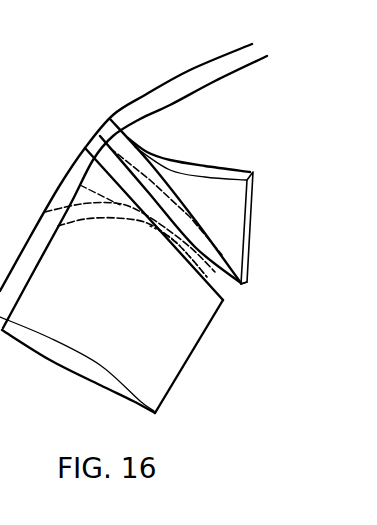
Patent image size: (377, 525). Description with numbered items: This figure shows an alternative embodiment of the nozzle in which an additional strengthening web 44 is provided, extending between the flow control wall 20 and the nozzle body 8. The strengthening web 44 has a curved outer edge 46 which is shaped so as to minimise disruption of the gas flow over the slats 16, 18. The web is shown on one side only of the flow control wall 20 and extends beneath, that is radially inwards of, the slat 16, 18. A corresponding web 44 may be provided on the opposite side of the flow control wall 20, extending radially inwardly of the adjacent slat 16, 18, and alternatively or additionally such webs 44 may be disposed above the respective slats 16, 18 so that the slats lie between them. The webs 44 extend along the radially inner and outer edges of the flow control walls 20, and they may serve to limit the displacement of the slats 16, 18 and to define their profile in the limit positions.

The nozzle body 8 is at (73, 143).
The strengthening web 44 is at (146, 193).
The flow control wall 20 is at (232, 200).
The curved outer edge 46 is at (235, 287).
The slat 16 is at (119, 324).
The slat 18 is at (157, 378).